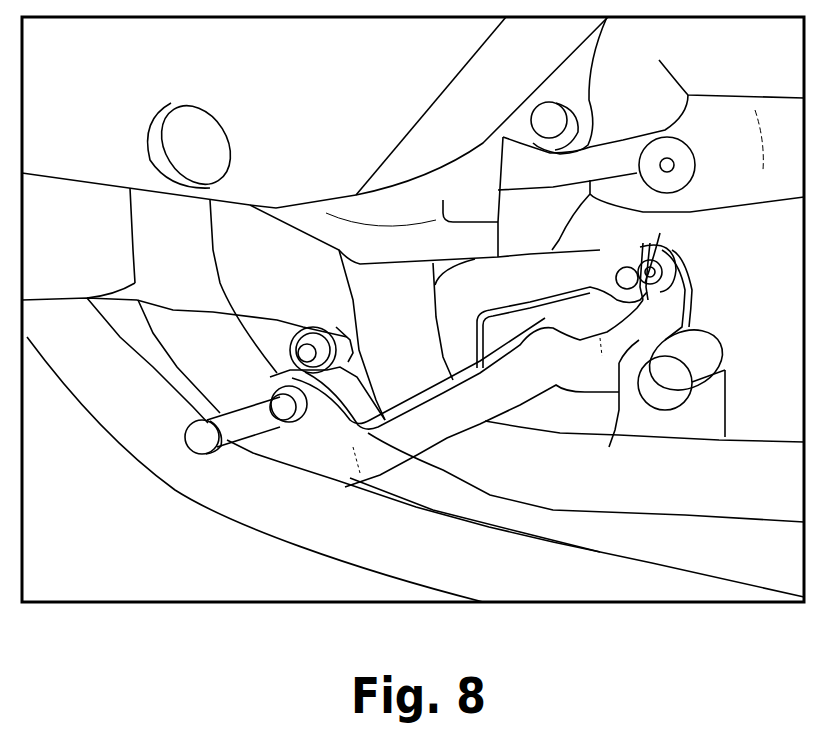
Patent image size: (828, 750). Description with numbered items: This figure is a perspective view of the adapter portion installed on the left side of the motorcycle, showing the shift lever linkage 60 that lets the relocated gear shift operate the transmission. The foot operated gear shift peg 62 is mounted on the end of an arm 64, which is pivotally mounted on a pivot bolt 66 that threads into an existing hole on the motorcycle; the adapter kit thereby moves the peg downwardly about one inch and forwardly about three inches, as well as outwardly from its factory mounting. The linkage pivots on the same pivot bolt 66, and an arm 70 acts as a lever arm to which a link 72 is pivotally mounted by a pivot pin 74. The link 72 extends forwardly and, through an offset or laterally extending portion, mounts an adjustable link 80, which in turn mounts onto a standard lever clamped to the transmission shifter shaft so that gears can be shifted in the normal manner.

The linkage 60 is at (443, 430).
The gear shift peg 62 is at (204, 442).
The arm 64 is at (322, 440).
The pivot bolt 66 is at (617, 421).
The arm 70 is at (690, 308).
The link 72 is at (543, 277).
The pivot pin 74 is at (690, 253).
The adjustable link 80 is at (350, 330).